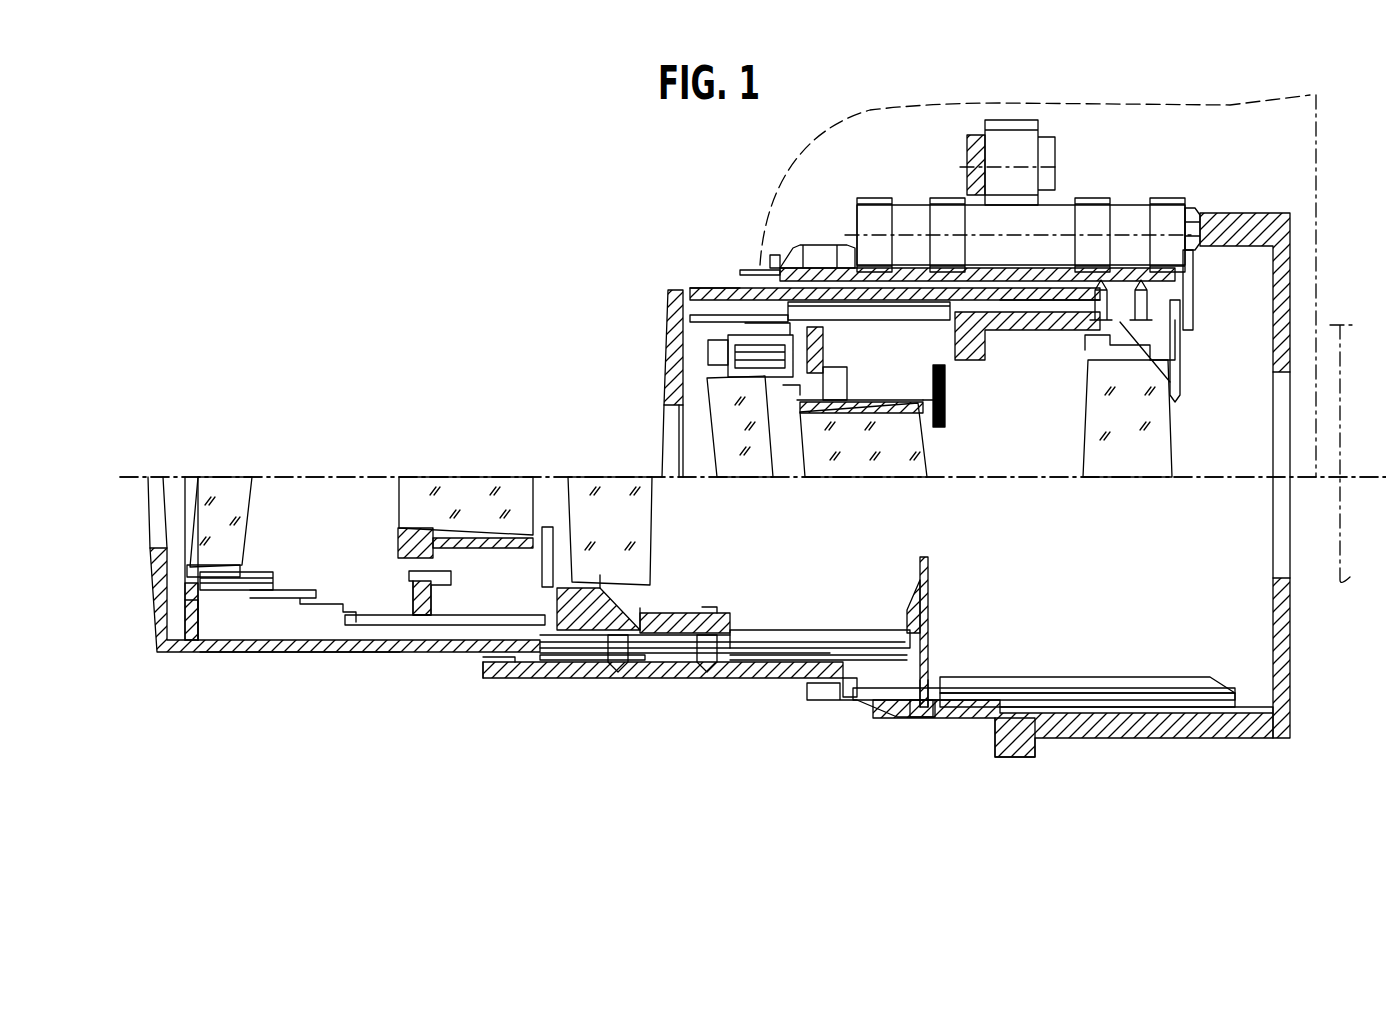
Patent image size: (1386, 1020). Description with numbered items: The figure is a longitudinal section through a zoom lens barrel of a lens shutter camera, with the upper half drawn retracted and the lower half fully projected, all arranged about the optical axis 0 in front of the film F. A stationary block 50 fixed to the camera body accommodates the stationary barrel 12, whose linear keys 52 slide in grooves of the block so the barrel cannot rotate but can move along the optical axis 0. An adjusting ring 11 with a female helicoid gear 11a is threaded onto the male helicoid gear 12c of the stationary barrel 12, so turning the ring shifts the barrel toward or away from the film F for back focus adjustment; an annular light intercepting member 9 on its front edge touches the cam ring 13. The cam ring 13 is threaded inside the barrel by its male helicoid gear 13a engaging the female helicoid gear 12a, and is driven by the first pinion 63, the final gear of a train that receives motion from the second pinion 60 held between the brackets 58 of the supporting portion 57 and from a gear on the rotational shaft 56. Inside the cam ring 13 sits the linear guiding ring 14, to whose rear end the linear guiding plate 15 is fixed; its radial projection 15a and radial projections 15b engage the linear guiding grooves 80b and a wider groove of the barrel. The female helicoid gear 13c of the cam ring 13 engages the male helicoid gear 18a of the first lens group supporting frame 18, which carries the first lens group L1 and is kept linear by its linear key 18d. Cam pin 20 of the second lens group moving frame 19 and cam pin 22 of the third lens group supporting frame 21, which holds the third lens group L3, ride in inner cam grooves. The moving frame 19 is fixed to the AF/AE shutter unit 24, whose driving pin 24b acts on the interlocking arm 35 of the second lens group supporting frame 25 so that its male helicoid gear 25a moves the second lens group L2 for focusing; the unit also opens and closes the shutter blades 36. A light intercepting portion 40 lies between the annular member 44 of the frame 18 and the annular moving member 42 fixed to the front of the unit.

The annular light intercepting member 9 is at (762, 265).
The adjusting ring 11 is at (826, 248).
The female helicoid gear 11a is at (923, 707).
The stationary barrel 12 is at (1097, 688).
The female helicoid gear 12a is at (1175, 683).
The male helicoid gear 12c is at (972, 707).
The cam ring 13 is at (745, 268).
The male helicoid gear 13a is at (1130, 268).
The female helicoid gear 13c is at (517, 657).
The linear guiding ring 14 is at (833, 633).
The linear guiding plate 15 is at (927, 593).
The radial projection 15a is at (1188, 265).
The radial projections 15b is at (953, 693).
The first lens group supporting frame 18 is at (692, 290).
The male helicoid gear 18a is at (1060, 288).
The linear key 18d is at (740, 288).
The second lens group moving frame 19 is at (1040, 332).
The cam pin 20 is at (625, 652).
The third lens group supporting frame 21 is at (1145, 357).
The cam pin 22 is at (722, 648).
The AF/AE shutter unit 24 is at (945, 380).
The driving pin 24b is at (837, 370).
The second lens group supporting frame 25 is at (900, 407).
The male helicoid gear 25a is at (937, 417).
The interlocking arm 35 is at (787, 387).
The shutter blades 36 is at (948, 403).
The light intercepting portion 40 is at (755, 323).
The annular moving member 42 is at (735, 310).
The annular member 44 is at (708, 360).
The stationary block 50 is at (1245, 213).
The linear keys 52 is at (1140, 713).
The rotational shaft 56 is at (852, 230).
The supporting portion 57 is at (965, 205).
The brackets 58 is at (970, 133).
The second pinion 60 is at (1025, 150).
The first pinion 63 is at (1100, 225).
The linear guiding grooves 80b is at (1028, 693).
The first lens group L1 is at (230, 478).
The second lens group L2 is at (462, 478).
The third lens group L3 is at (600, 478).
The optical axis 0 is at (293, 470).
The film F is at (1343, 387).